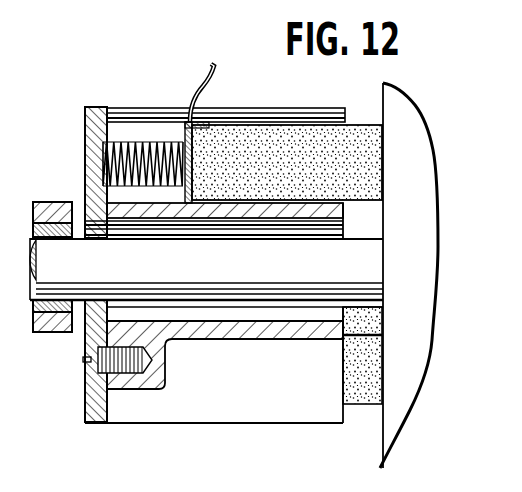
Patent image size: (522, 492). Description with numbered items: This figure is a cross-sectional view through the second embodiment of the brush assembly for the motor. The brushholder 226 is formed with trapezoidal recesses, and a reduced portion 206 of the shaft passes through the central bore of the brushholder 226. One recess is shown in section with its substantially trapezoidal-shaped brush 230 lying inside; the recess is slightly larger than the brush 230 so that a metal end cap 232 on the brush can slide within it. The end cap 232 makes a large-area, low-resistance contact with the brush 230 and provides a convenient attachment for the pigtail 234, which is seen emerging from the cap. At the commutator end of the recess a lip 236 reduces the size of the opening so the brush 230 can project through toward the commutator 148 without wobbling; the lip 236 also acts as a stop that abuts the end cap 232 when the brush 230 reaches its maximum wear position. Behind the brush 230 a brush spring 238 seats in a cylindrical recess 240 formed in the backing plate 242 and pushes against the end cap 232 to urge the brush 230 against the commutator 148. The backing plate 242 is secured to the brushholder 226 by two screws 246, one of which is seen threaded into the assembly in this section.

The commutator 148 is at (418, 186).
The reduced portion of shaft 206 is at (246, 279).
The brushholder 226 is at (160, 426).
The brush 230 is at (274, 148).
The end cap 232 is at (187, 129).
The pigtail 234 is at (215, 72).
The lip 236 is at (348, 211).
The brush spring 238 is at (131, 139).
The cylindrical recess 240 is at (104, 134).
The backing plate 242 is at (85, 151).
The screw 246 is at (83, 369).